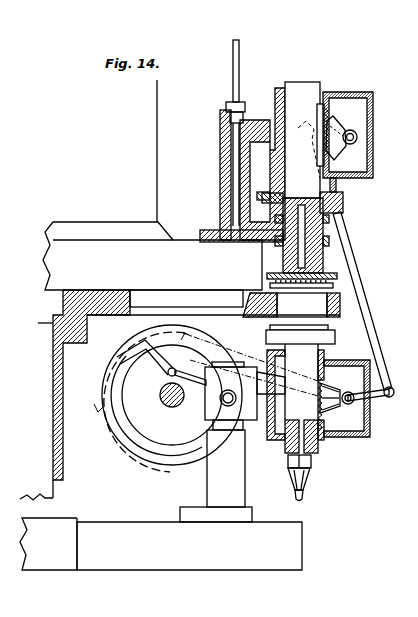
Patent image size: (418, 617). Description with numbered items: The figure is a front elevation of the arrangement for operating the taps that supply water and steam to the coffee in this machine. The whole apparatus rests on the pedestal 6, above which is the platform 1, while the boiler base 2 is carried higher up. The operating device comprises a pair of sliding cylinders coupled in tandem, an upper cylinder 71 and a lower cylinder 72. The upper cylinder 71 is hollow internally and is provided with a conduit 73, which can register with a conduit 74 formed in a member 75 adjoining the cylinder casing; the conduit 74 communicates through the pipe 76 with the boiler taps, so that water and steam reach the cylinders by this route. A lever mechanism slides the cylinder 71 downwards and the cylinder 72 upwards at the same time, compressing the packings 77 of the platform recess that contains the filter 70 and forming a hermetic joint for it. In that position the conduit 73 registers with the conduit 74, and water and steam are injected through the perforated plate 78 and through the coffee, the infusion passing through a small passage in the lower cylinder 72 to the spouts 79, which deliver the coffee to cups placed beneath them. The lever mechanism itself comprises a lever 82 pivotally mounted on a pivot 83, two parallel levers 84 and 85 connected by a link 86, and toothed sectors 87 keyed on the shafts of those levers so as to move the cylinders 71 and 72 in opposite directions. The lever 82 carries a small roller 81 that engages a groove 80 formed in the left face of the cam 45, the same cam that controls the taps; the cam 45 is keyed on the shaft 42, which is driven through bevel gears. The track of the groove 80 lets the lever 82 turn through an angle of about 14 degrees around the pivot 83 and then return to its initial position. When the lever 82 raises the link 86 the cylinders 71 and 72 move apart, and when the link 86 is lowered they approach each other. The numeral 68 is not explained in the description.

The platform 1 is at (180, 292).
The boiler base 2 is at (152, 256).
The pedestal 6 is at (161, 544).
The angle of about fourteen degrees 14 is at (244, 363).
The shaft 42 is at (172, 408).
The cam 45 is at (145, 455).
The rack 68 is at (317, 107).
The filter 70 is at (308, 305).
The upper sliding cylinder 71 is at (298, 86).
The lower sliding cylinder 72 is at (266, 335).
The conduit 73 is at (295, 229).
The conduit 74 is at (242, 242).
The member 75 is at (253, 120).
The pipe 76 is at (235, 73).
The packings 77 is at (249, 293).
The perforated plate 78 is at (330, 275).
The spouts 79 is at (305, 493).
The groove 80 is at (130, 430).
The roller 81 is at (168, 372).
The lever 82 is at (189, 377).
The pivot 83 is at (345, 402).
The lever 84 is at (380, 402).
The lever 85 is at (341, 140).
The link 86 is at (376, 334).
The toothed sectors 87 is at (337, 96).